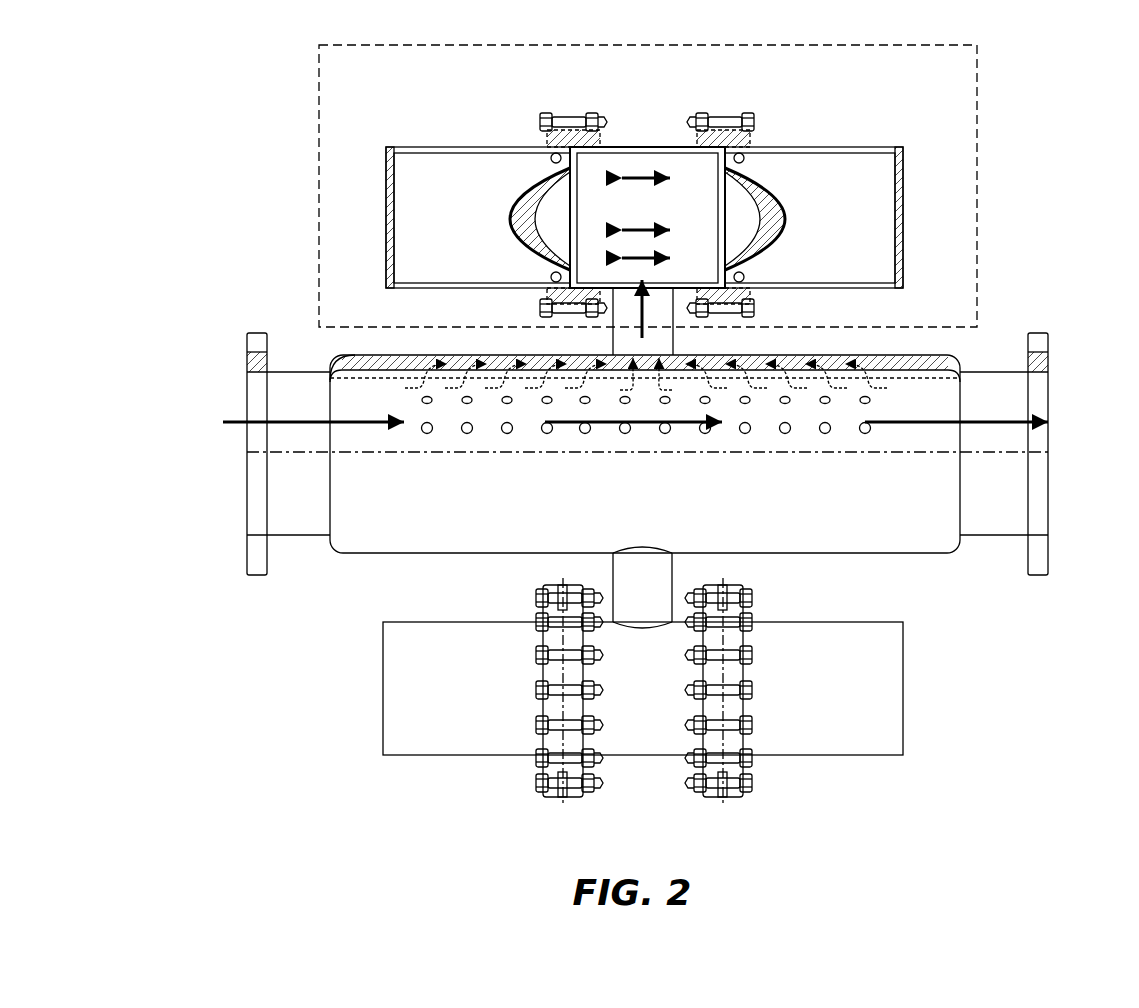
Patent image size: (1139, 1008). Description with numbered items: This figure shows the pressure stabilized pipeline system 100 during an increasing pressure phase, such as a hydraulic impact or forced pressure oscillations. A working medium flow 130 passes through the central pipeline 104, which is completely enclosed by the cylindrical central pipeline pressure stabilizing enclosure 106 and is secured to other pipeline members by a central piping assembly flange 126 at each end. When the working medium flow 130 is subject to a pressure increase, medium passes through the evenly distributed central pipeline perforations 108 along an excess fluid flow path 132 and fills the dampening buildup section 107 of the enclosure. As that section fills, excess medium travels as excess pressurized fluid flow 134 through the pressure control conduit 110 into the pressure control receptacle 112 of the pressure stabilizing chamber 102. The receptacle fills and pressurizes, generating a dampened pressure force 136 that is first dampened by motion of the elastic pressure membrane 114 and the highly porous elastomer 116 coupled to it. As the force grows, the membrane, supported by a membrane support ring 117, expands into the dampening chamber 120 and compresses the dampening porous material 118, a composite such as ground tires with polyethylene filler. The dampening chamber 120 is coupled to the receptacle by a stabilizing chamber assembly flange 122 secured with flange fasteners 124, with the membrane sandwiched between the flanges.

The pressure stabilized pipeline system 100 is at (962, 645).
The pressure stabilizing chamber 102 is at (978, 200).
The central pipeline 104 is at (300, 520).
The cylindrical central pipeline pressure stabilizing enclosure 106 is at (445, 538).
The dampening buildup section 107 is at (355, 371).
The central pipeline perforations 108 is at (505, 403).
The pressure control conduit 110 is at (663, 315).
The pressure control receptacle 112 is at (665, 165).
The elastic pressure membrane 114 is at (536, 219).
The highly porous elastomer 116 is at (726, 222).
The membrane support ring 117 is at (742, 283).
The dampening porous material 118 is at (428, 172).
The dampening chamber 120 is at (508, 148).
The stabilizing chamber assembly flange 122 is at (560, 108).
The flange fastener 124 is at (752, 118).
The central piping assembly flange 126 is at (258, 498).
The working medium flow 130 is at (353, 423).
The excess fluid flow path 132 is at (428, 378).
The excess pressurized fluid flow 134 is at (628, 312).
The dampened pressure force 136 is at (640, 170).